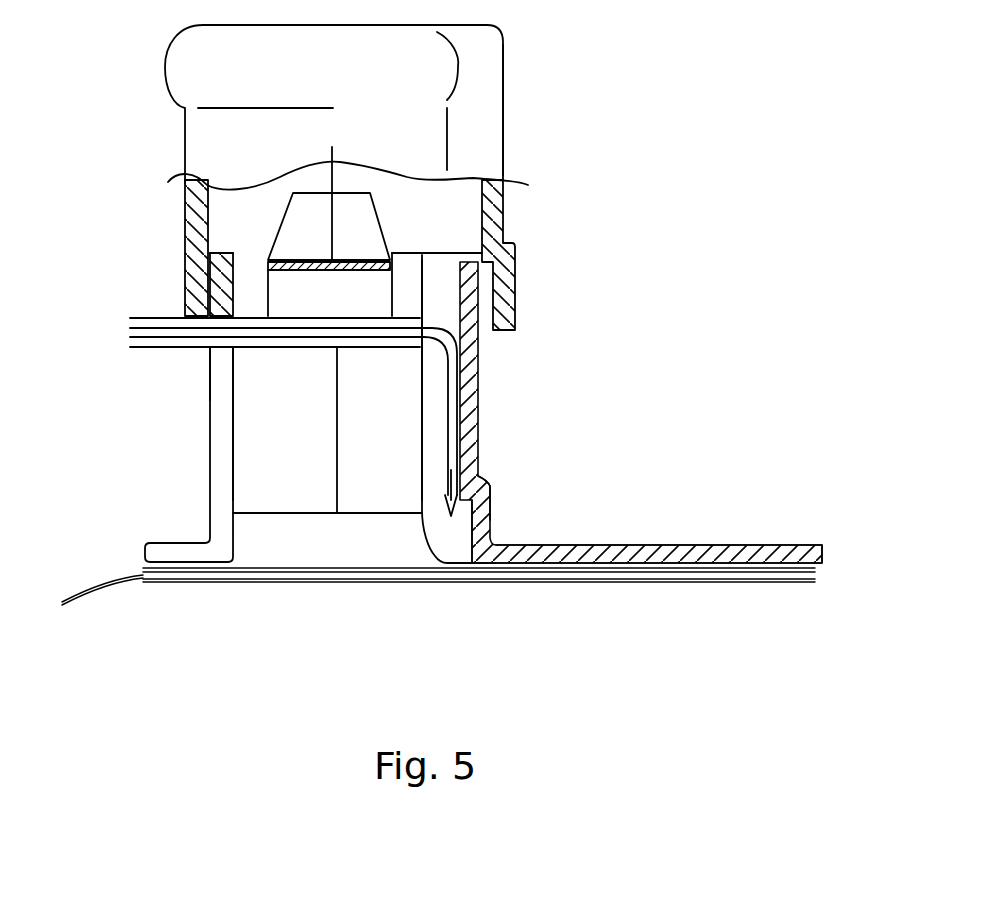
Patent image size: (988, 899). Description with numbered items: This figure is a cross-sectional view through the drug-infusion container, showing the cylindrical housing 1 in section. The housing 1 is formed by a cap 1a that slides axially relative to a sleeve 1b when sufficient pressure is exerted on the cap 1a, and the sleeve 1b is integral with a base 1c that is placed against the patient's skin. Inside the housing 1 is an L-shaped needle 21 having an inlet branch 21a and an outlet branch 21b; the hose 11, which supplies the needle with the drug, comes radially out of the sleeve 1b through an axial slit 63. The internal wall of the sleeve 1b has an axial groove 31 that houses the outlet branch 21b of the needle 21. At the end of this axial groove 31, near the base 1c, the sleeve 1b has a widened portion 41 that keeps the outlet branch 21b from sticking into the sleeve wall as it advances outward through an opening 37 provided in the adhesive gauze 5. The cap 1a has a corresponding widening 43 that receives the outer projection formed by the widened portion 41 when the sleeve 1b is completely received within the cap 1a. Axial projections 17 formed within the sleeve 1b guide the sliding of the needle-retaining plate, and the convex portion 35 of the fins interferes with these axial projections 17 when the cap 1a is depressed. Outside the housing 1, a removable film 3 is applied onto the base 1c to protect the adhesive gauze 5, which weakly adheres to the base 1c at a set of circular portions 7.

The housing 1 is at (540, 241).
The cap 1a is at (503, 115).
The sleeve 1b is at (480, 383).
The base 1c is at (722, 545).
The removable film 3 is at (697, 582).
The adhesive gauze 5 is at (815, 575).
The circular portions 7 is at (163, 582).
The hose 11 is at (157, 350).
The axial projections 17 is at (325, 478).
The L-shaped needle 21 is at (445, 362).
The inlet branch 21a is at (290, 350).
The outlet branch 21b is at (447, 442).
The axial groove 31 is at (480, 355).
The convex portion 35 is at (307, 195).
The opening 37 is at (458, 583).
The widened portion 41 is at (458, 527).
The widening 43 is at (490, 513).
The axial slit 63 is at (207, 392).